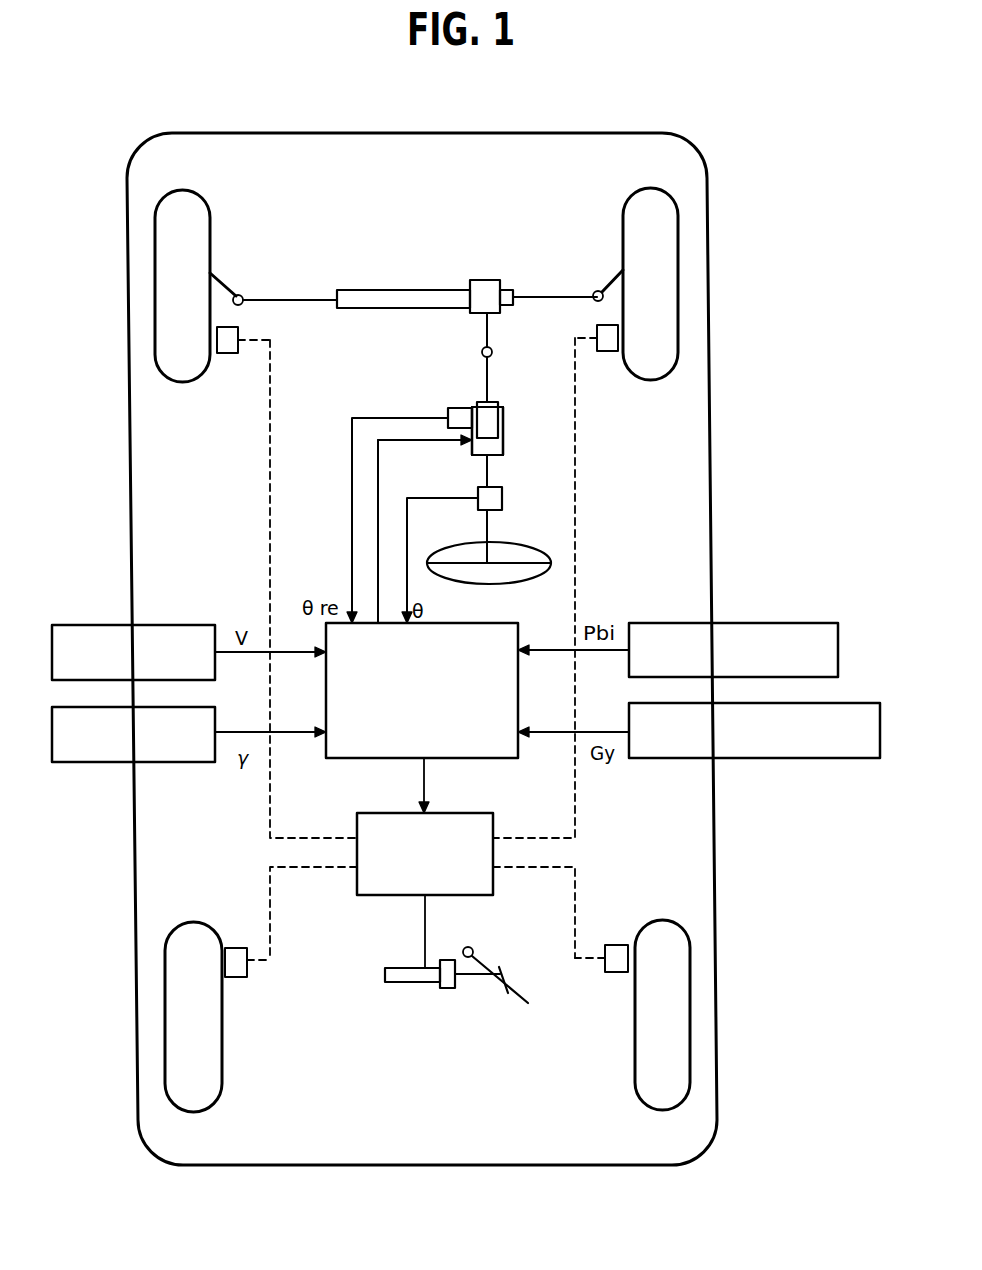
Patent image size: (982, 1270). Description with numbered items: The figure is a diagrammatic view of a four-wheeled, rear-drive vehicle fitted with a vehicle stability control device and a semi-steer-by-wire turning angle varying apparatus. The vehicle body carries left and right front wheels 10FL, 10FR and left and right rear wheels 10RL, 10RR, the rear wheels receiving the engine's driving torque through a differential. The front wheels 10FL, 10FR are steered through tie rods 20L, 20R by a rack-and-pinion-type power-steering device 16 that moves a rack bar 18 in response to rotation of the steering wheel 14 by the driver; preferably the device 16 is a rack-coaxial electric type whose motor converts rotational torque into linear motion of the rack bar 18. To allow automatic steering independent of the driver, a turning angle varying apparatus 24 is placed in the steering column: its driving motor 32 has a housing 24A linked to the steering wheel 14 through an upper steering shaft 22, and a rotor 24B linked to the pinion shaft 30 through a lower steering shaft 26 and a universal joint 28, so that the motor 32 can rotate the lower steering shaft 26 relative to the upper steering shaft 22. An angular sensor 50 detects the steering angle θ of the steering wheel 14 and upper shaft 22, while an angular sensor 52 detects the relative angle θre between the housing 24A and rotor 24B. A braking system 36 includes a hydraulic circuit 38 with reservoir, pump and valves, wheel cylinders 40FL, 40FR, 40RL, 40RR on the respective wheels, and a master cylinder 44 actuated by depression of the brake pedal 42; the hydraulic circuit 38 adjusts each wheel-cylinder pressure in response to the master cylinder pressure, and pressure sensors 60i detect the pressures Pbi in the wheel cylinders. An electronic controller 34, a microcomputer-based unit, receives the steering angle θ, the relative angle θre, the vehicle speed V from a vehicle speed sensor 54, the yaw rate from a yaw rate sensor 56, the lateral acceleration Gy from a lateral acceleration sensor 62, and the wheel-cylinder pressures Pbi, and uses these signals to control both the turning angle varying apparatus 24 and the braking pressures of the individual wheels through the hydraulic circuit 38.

The left front wheel 10FL is at (155, 300).
The right front wheel 10FR is at (678, 297).
The left rear wheel 10RL is at (165, 1022).
The right rear wheel 10RR is at (690, 1020).
The left tie rod 20L is at (224, 284).
The right tie rod 20R is at (613, 276).
The rack bar 18 is at (290, 298).
The power-steering device 16 is at (458, 266).
The pinion shaft 30 is at (490, 330).
The universal joint 28 is at (481, 350).
The lower steering shaft 26 is at (490, 368).
The driving motor 32 is at (480, 396).
The turning angle varying apparatus 24 is at (462, 455).
The housing 24A is at (504, 437).
The rotor 24B is at (494, 414).
The angular sensor 52 is at (449, 407).
The angular sensor 50 is at (503, 497).
The upper steering shaft 22 is at (484, 524).
The steering wheel 14 is at (492, 585).
The front-left wheel cylinder 40FL is at (228, 353).
The front-right wheel cylinder 40FR is at (608, 351).
The rear-left wheel cylinder 40RL is at (238, 977).
The rear-right wheel cylinder 40RR is at (618, 972).
The vehicle speed sensor 54 is at (164, 624).
The yaw rate sensor 56 is at (162, 762).
The pressure sensors 60i is at (684, 622).
The lateral acceleration sensor 62 is at (688, 760).
The electronic controller 34 is at (436, 744).
The hydraulic circuit 38 is at (436, 882).
The braking system 36 is at (404, 996).
The master cylinder 44 is at (406, 964).
The brake pedal 42 is at (507, 978).